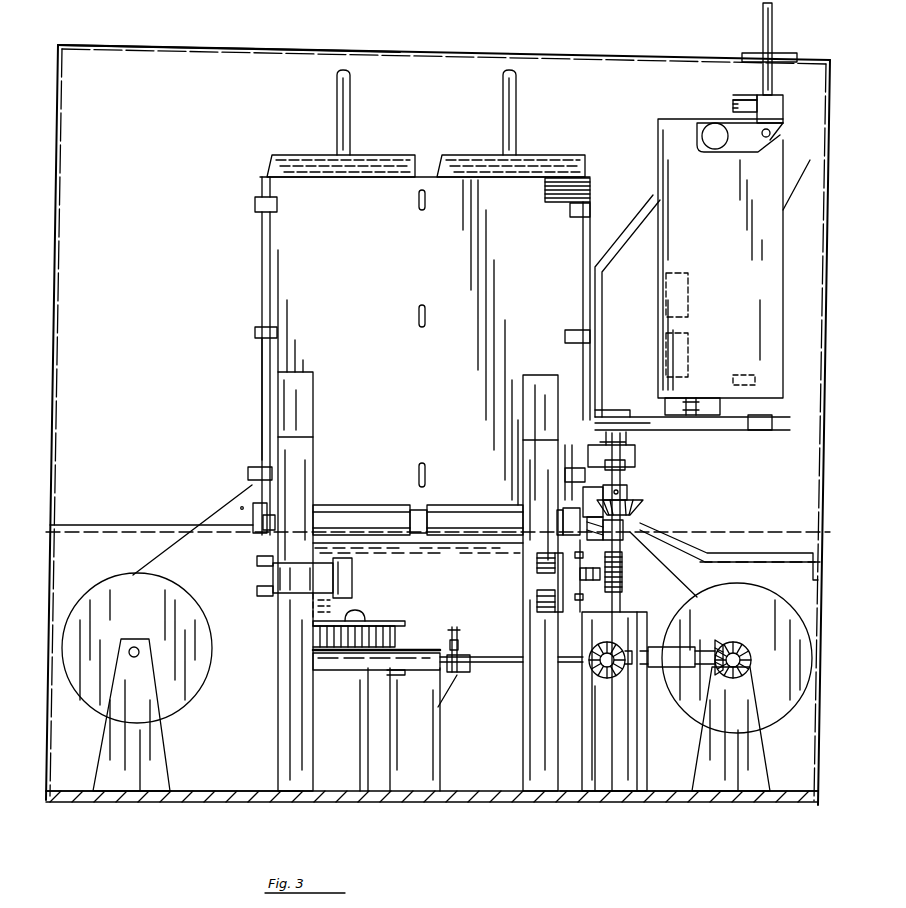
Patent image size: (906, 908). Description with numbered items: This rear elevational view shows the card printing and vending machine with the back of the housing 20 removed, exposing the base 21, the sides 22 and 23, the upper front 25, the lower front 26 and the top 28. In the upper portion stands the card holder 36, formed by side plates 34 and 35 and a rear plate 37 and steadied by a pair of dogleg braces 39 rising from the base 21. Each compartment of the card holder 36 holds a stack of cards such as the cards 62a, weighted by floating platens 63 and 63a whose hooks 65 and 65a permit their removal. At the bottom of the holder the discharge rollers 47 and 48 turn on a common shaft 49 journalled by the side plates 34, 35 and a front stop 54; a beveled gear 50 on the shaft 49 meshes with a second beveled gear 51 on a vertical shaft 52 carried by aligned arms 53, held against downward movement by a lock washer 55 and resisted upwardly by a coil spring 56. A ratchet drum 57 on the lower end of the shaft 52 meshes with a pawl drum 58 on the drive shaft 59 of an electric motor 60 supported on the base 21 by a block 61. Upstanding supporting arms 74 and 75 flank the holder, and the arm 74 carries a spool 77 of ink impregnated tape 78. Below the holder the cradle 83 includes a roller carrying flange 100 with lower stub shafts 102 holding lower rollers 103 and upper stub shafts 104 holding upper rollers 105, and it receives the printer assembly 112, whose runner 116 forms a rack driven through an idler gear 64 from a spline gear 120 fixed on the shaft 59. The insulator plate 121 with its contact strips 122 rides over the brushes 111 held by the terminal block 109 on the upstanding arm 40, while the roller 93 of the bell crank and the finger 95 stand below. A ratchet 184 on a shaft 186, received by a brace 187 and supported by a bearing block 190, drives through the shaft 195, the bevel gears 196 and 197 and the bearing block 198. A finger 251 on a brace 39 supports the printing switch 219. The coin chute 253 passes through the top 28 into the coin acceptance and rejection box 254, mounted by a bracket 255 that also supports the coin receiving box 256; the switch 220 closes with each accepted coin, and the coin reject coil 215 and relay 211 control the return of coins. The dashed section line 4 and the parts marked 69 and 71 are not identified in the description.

The section line 4 is at (439, 518).
The housing 20 is at (342, 52).
The base 21 is at (500, 792).
The side 22 is at (60, 340).
The side 23 is at (826, 256).
The upper front 25 is at (103, 57).
The lower front 26 is at (222, 793).
The top 28 is at (190, 50).
The side plate 34 is at (262, 246).
The side plate 35 is at (588, 246).
The card holder 36 is at (258, 290).
The rear plate 37 is at (262, 186).
The dogleg braces 39 is at (300, 742).
The upstanding arm 40 is at (366, 768).
The discharge roller 47 is at (384, 508).
The second discharge roller 48 is at (450, 510).
The common shaft 49 is at (566, 518).
The beveled gear 50 is at (560, 526).
The second beveled gear 51 is at (643, 504).
The vertical shaft 52 is at (606, 420).
The aligned arms 53 is at (610, 428).
The front stop 54 is at (419, 510).
The lock washer 55 is at (637, 462).
The coil spring 56 is at (626, 480).
The ratchet drum 57 is at (638, 522).
The pawl drum 58 is at (645, 530).
The drive shaft 59 is at (618, 604).
The electric motor 60 is at (636, 620).
The block 61 is at (620, 793).
The cards 62a is at (588, 182).
The platen 63 is at (400, 156).
The platen 63a is at (526, 156).
The idler gear 64 is at (620, 574).
The hook 65 is at (350, 115).
The hook 65a is at (517, 115).
The clamp 69 is at (246, 498).
The block 71 is at (583, 506).
The supporting arm 74 is at (162, 760).
The supporting arm 75 is at (760, 760).
The spool 77 is at (98, 590).
The ink impregnated tape 78 is at (210, 520).
The U-shaped cradle 83 is at (459, 645).
The roller 93 is at (403, 670).
The finger 95 is at (398, 704).
The roller carrying flange 100 is at (275, 603).
The lower stub shafts 102 is at (258, 592).
The lower rollers 103 is at (538, 596).
The upper stub shafts 104 is at (258, 562).
The upper rollers 105 is at (538, 562).
The terminal block 109 is at (362, 665).
The rearwardly extending brushes 111 is at (388, 648).
The printer assembly 112 is at (310, 612).
The runner 116 is at (542, 582).
The spline gear 120 is at (623, 580).
The insulator plate 121 is at (385, 630).
The contact strips 122 is at (365, 611).
The ratchet 184 is at (455, 628).
The shaft 186 is at (476, 656).
The brace 187 is at (468, 668).
The bearing block 190 is at (612, 686).
The shaft 195 is at (692, 665).
The bevel gear 196 is at (718, 642).
The bevel gear 197 is at (740, 646).
The bearing block 198 is at (648, 738).
The relay 211 is at (688, 356).
The coin reject coil 215 is at (688, 288).
The printing switch 219 is at (355, 572).
The switch 220 is at (736, 375).
The finger 251 is at (322, 568).
The coin chute 253 is at (772, 42).
The coin acceptance and rejection box 254 is at (783, 208).
The bracket 255 is at (622, 255).
The coin receiving box 256 is at (808, 440).